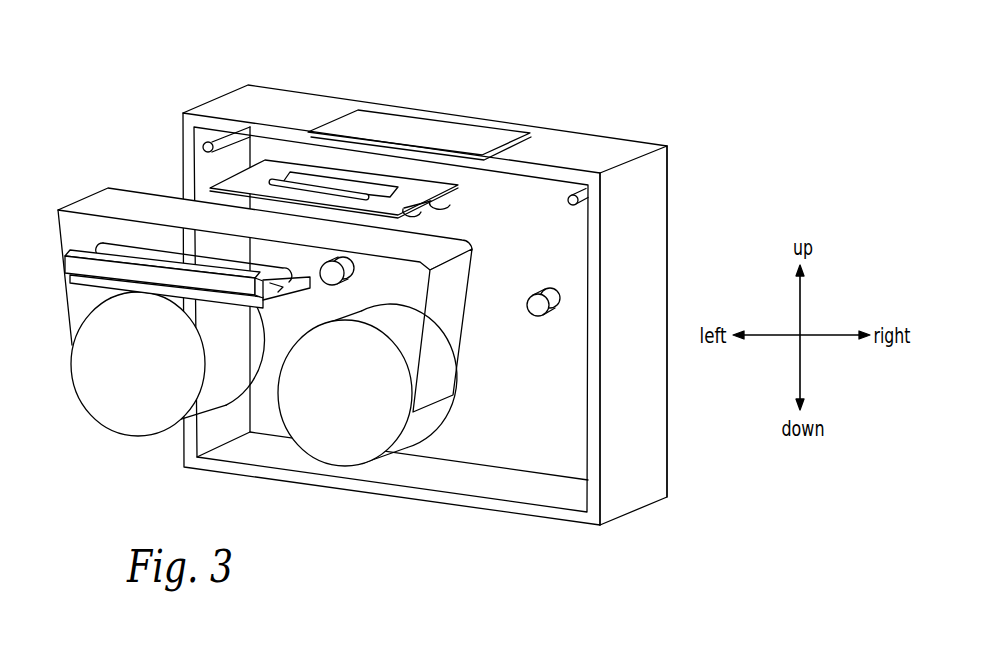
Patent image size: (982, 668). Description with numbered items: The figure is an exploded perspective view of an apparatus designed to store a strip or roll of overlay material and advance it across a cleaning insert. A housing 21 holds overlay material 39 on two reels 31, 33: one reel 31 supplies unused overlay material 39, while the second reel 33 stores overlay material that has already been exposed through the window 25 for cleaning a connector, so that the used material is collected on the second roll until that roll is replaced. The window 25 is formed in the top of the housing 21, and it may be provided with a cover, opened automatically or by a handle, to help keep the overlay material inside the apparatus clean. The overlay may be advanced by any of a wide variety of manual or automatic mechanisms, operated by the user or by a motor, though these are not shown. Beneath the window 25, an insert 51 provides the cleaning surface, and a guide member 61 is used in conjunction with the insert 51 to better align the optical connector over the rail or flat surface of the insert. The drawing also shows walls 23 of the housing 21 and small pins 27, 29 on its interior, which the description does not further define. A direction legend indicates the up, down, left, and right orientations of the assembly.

The housing 21 is at (519, 524).
The housing wall 23 is at (512, 435).
The window 25 is at (465, 137).
The pin 27 is at (203, 148).
The pin 29 is at (344, 274).
The reel 31 is at (124, 376).
The second reel 33 is at (334, 399).
The overlay material 39 is at (141, 226).
The insert 51 is at (62, 267).
The guide member 61 is at (458, 188).